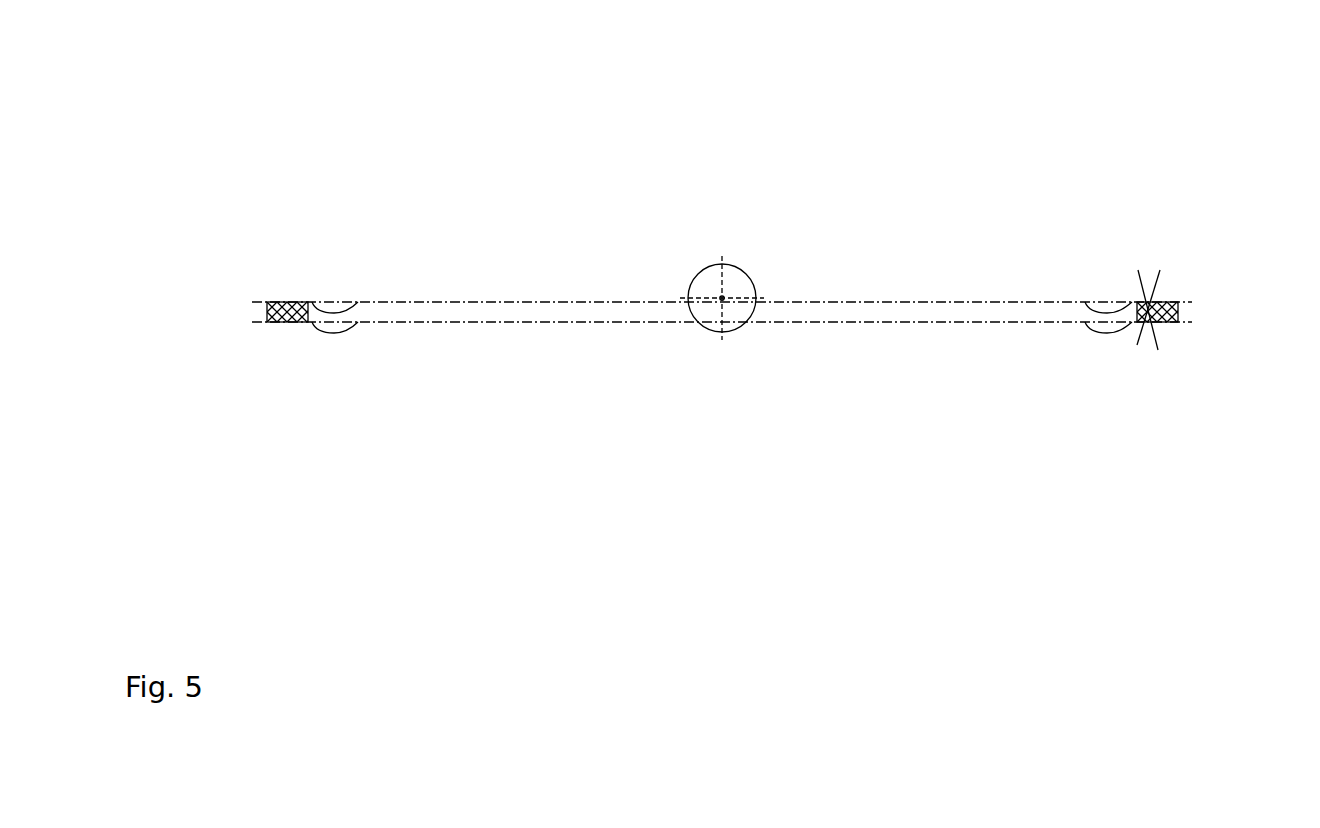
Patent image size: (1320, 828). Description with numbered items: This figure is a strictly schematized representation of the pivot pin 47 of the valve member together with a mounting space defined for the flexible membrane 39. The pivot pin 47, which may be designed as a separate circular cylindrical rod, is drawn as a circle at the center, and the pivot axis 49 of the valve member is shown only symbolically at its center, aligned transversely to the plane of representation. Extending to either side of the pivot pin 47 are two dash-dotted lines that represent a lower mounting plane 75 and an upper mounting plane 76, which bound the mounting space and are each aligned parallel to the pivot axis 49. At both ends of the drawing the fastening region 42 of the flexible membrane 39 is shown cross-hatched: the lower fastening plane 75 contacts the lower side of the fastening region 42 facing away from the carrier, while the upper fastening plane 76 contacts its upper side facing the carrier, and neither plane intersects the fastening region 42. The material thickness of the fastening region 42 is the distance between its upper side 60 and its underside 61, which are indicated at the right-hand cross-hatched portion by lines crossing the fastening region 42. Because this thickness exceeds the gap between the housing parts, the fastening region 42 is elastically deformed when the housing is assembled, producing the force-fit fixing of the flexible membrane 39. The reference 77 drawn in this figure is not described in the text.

The flexible membrane 39 is at (244, 140).
The fastening region 42 is at (267, 312).
The pivot pin 47 is at (738, 282).
The pivot axis 49 is at (720, 297).
The upper side 60 is at (1160, 270).
The underside 61 is at (1158, 350).
The lower mounting plane 75 is at (852, 323).
The upper mounting plane 76 is at (438, 302).
The elongate body 77 is at (944, 306).